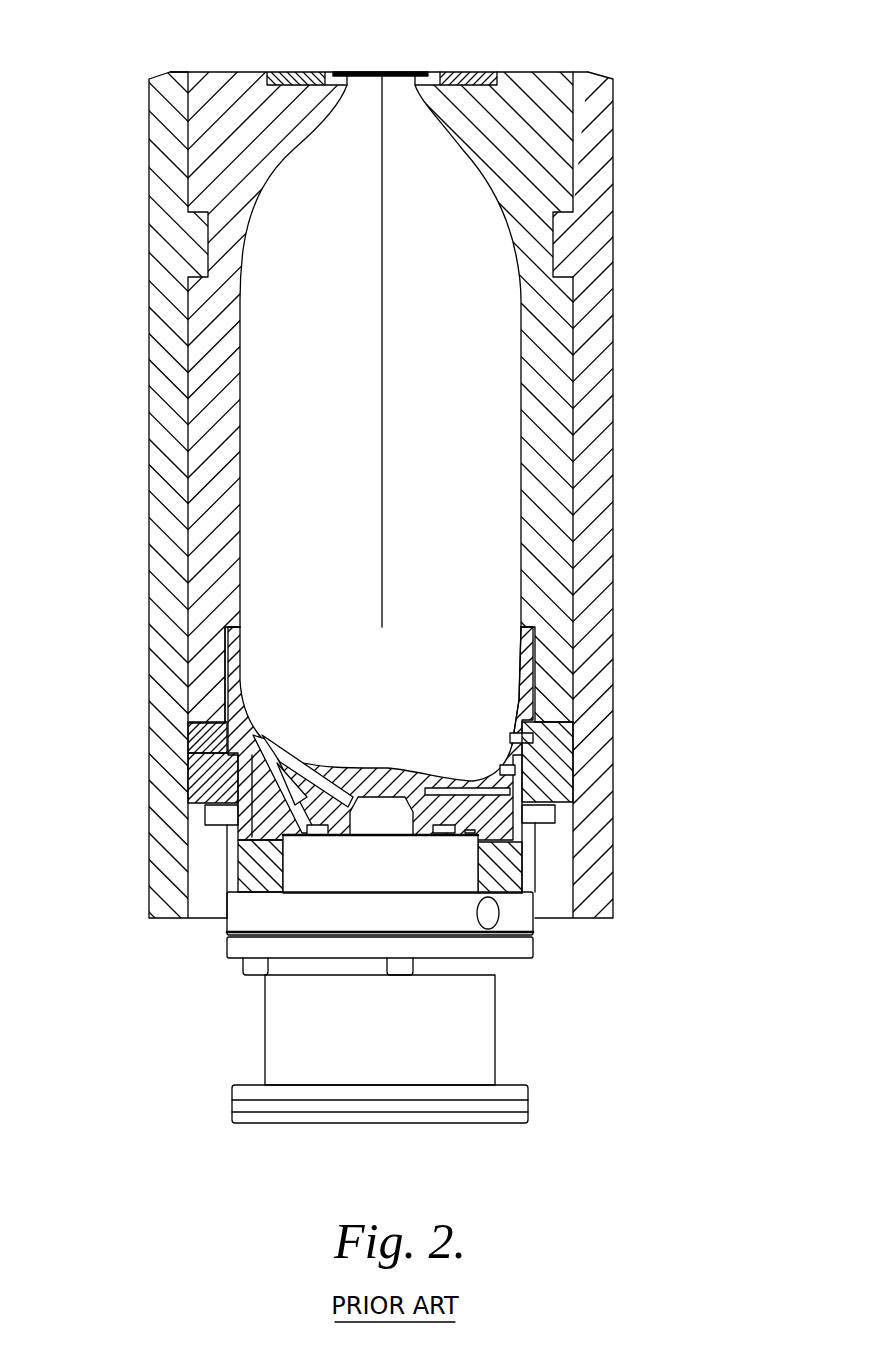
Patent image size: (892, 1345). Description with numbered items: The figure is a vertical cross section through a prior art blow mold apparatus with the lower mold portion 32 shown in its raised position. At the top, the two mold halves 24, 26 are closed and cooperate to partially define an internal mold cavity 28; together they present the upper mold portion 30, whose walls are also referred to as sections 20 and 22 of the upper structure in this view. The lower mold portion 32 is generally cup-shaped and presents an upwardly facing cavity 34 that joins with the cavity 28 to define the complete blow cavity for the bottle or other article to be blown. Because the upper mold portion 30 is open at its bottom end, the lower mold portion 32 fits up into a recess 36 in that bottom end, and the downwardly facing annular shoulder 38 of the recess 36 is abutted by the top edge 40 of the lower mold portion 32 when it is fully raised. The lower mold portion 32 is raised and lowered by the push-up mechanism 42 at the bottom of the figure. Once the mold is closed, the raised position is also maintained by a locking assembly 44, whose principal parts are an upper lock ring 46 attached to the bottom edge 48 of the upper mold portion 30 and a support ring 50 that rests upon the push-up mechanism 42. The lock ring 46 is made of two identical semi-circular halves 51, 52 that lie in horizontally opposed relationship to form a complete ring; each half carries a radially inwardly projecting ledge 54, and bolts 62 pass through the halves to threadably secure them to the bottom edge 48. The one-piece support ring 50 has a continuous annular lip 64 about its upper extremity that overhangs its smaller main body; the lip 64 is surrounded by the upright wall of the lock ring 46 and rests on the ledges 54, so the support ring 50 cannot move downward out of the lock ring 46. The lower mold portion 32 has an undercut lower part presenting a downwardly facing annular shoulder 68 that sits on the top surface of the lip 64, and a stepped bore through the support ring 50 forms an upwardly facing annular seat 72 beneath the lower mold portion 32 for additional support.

The housing 20 is at (160, 412).
The housing wall 22 is at (598, 403).
The mold half 24 is at (237, 95).
The mold half 26 is at (525, 90).
The internal mold cavity 28 is at (500, 266).
The upper mold portion 30 is at (546, 61).
The lower mold portion 32 is at (545, 645).
The upwardly facing cavity 34 is at (492, 681).
The recess 36 is at (225, 668).
The annular shoulder 38 is at (240, 636).
The top edge 40 is at (523, 628).
The push-up mechanism 42 is at (242, 1034).
The locking assembly 44 is at (212, 888).
The upper lock ring 46 is at (194, 826).
The bottom edge 48 is at (565, 733).
The support ring 50 is at (540, 881).
The semi-circular half 51 is at (586, 762).
The semi-circular half 52 is at (180, 776).
The ledge 54 is at (228, 768).
The bolt 62 is at (212, 828).
The annular lip 64 is at (550, 773).
The annular shoulder 68 is at (200, 735).
The annular seat 72 is at (517, 838).